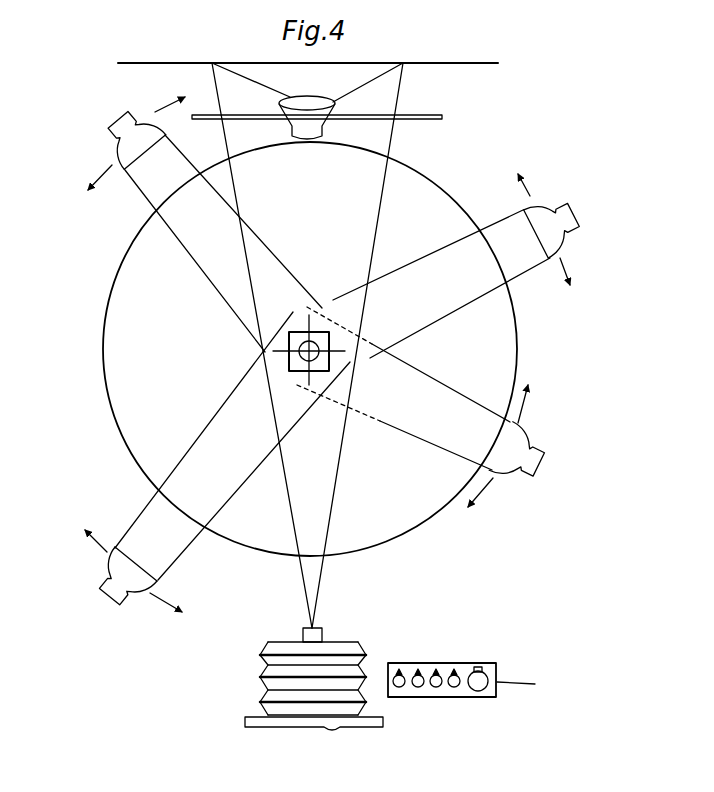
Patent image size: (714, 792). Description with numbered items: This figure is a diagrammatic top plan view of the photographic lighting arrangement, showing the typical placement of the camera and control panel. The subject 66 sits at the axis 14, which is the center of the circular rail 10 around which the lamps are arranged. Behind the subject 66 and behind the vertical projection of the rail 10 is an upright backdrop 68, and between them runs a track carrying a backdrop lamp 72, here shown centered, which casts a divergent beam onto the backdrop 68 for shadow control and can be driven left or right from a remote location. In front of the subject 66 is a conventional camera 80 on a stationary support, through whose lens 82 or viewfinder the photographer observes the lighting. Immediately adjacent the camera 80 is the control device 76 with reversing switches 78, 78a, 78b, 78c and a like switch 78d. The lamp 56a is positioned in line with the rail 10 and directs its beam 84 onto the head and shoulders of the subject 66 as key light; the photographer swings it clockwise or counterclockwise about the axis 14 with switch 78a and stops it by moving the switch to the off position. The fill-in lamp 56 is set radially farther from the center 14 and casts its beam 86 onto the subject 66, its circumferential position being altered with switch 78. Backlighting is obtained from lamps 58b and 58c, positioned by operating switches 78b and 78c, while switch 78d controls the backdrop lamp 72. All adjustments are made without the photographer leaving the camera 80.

The rail 10 is at (442, 190).
The axis 14 is at (307, 362).
The lamp 56 is at (137, 587).
The lamp 56a is at (522, 450).
The lamp 58b is at (578, 210).
The lamp 58c is at (116, 133).
The subject 66 is at (330, 340).
The backdrop 68 is at (458, 63).
The lamp 72 is at (323, 129).
The control device 76 is at (438, 662).
The reversing switch 78 is at (399, 688).
The reversing switch 78a is at (418, 688).
The reversing switch 78b is at (436, 688).
The reversing switch 78c is at (454, 688).
The switch 78d is at (480, 691).
The camera 80 is at (265, 681).
The camera lens 82 is at (323, 636).
The beam 84 is at (438, 384).
The beam 86 is at (138, 516).